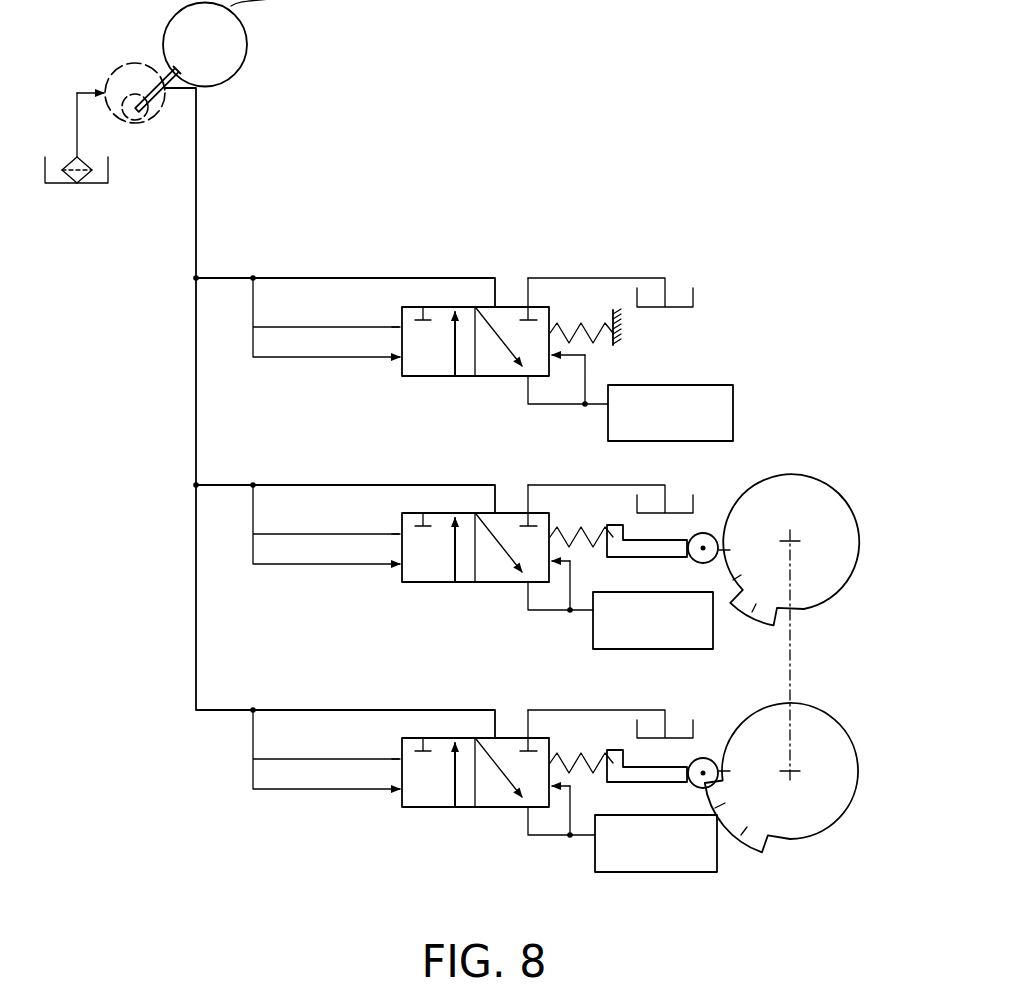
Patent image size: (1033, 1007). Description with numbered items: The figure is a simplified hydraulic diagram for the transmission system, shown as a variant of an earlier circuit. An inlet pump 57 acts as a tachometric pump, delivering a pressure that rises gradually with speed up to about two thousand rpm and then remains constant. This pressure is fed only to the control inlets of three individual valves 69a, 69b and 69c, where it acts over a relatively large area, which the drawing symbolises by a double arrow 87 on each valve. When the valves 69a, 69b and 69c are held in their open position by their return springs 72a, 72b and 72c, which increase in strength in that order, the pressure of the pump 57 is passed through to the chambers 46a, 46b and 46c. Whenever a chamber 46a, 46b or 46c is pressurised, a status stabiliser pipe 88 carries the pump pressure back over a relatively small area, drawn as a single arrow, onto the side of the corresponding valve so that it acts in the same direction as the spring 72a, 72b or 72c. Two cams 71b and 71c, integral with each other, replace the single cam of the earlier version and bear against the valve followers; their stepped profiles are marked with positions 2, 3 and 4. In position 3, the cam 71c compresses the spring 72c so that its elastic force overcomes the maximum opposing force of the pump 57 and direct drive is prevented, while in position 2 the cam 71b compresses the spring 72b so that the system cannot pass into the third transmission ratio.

The inlet pump 57 is at (138, 63).
The double arrow 87 is at (318, 357).
The individual valve 69a is at (424, 377).
The individual valve 69b is at (424, 583).
The individual valve 69c is at (424, 808).
The return spring 72a is at (582, 322).
The return spring 72b is at (584, 527).
The return spring 72c is at (585, 751).
The status stabiliser pipe 88 is at (587, 378).
The chamber 46a is at (670, 413).
The chamber 46b is at (653, 620).
The chamber 46c is at (656, 843).
The cam 71b is at (858, 540).
The cam 71c is at (858, 770).
The position 2 is at (755, 709).
The position 3 is at (734, 687).
The cam step 4 is at (731, 660).